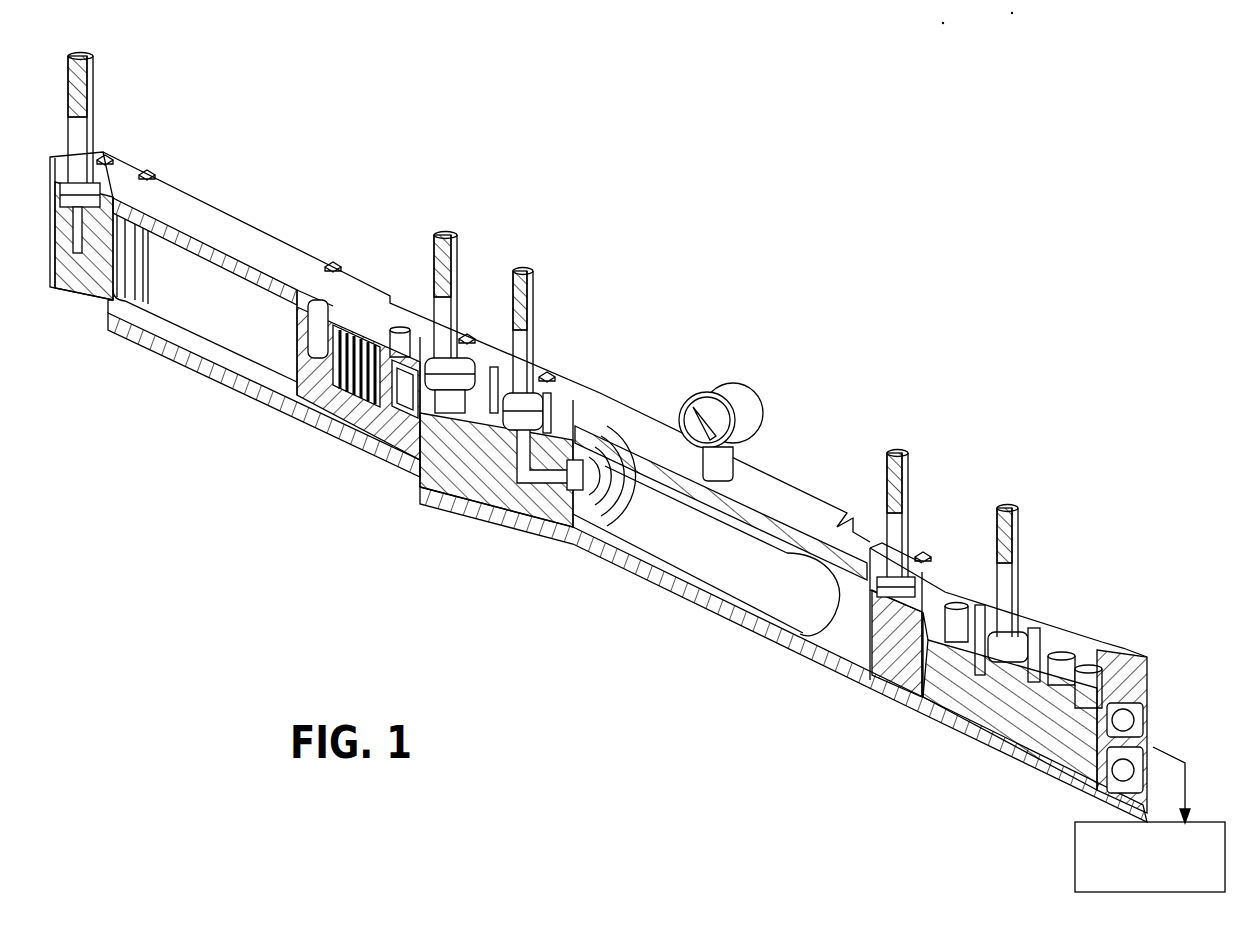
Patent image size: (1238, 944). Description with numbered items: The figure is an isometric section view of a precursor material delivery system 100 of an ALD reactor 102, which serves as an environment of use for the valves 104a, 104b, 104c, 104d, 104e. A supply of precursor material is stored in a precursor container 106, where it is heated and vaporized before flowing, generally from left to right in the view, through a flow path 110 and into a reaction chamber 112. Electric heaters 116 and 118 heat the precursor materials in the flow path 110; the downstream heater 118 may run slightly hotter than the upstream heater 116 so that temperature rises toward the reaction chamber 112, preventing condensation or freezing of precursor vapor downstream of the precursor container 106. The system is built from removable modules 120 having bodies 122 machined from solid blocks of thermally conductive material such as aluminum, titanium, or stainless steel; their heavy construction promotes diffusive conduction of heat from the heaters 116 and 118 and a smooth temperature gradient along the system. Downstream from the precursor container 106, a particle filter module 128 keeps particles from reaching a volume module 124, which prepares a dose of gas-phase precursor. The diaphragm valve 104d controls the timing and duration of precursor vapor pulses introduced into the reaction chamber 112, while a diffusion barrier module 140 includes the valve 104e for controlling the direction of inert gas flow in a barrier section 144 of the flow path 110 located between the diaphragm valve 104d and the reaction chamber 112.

The precursor material delivery system 100 is at (366, 116).
The ALD reactor 102 is at (692, 158).
The valve 104a is at (93, 103).
The valve 104b is at (455, 247).
The valve 104c is at (537, 307).
The diaphragm valve 104d is at (907, 483).
The valve 104e is at (1020, 540).
The precursor container 106 is at (240, 298).
The flow path 110 is at (296, 410).
The reaction chamber 112 is at (1203, 823).
The electric heater 116 is at (247, 398).
The electric heater 118 is at (723, 615).
The removable module 120 is at (495, 483).
The body 122 is at (907, 707).
The volume module 124 is at (672, 547).
The particle filter module 128 is at (373, 307).
The diffusion barrier module 140 is at (1090, 795).
The barrier section 144 is at (1017, 727).